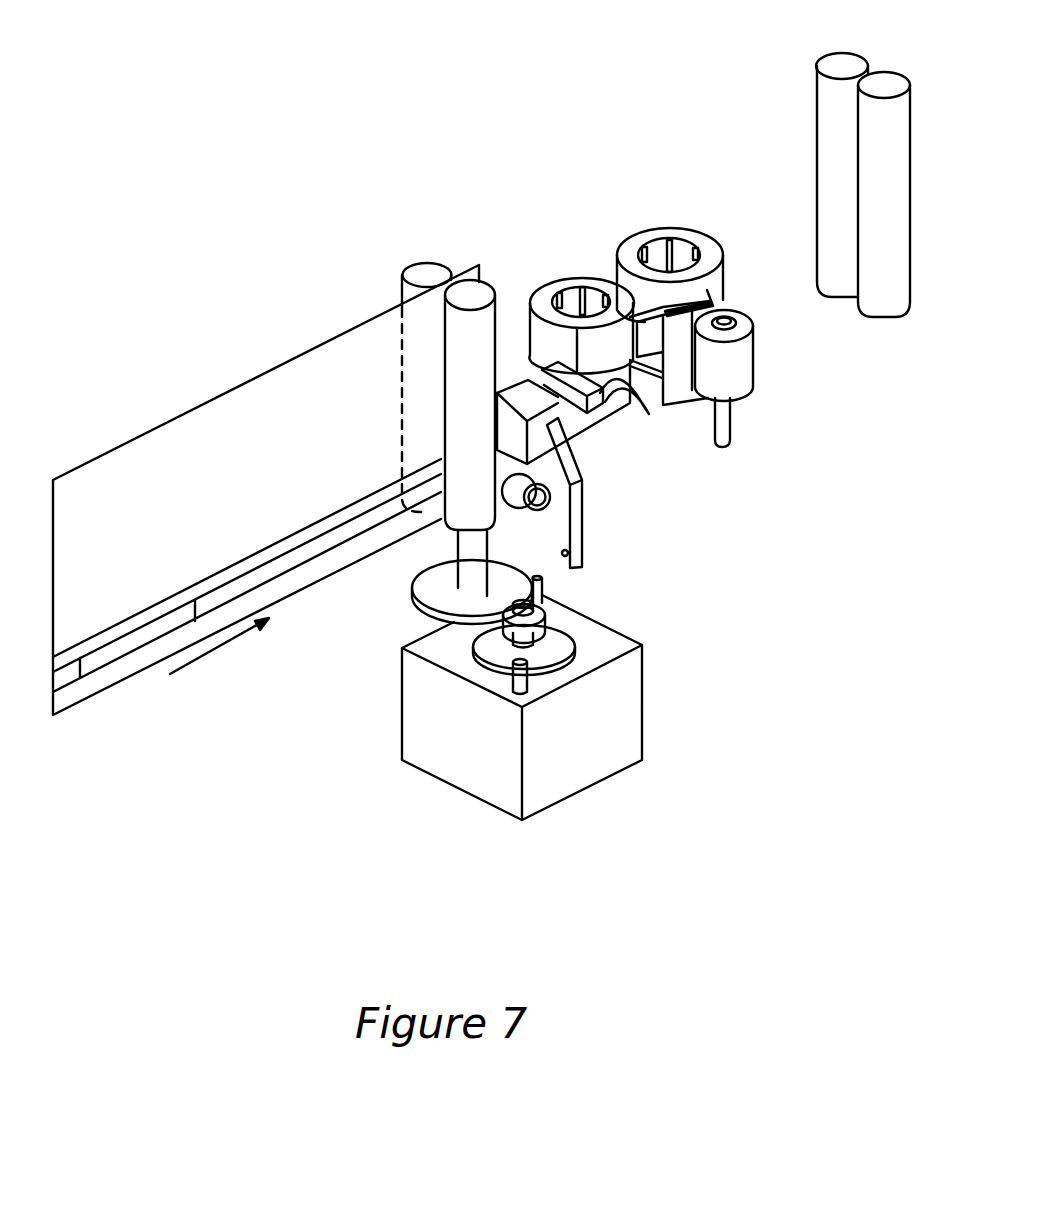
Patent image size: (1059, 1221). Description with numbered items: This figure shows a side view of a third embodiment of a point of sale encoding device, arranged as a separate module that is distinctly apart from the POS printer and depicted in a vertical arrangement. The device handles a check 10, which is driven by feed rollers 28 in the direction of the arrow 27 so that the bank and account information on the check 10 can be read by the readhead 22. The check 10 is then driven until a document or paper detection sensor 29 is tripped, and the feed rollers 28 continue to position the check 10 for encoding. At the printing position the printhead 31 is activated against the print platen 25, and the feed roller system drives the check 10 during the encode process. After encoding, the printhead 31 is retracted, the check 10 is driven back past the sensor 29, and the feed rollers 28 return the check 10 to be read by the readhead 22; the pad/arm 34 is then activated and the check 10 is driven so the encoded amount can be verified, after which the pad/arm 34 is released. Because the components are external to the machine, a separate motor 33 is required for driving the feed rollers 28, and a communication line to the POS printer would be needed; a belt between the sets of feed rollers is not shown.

The check 10 is at (200, 406).
The readhead 22 is at (518, 392).
The print platen 25 is at (742, 378).
The arrow 27 is at (200, 657).
The feed rollers 28 is at (428, 268).
The document or paper detection sensor 29 is at (630, 405).
The printhead 31 is at (692, 405).
The motor 33 is at (452, 787).
The pad/arm 34 is at (577, 530).